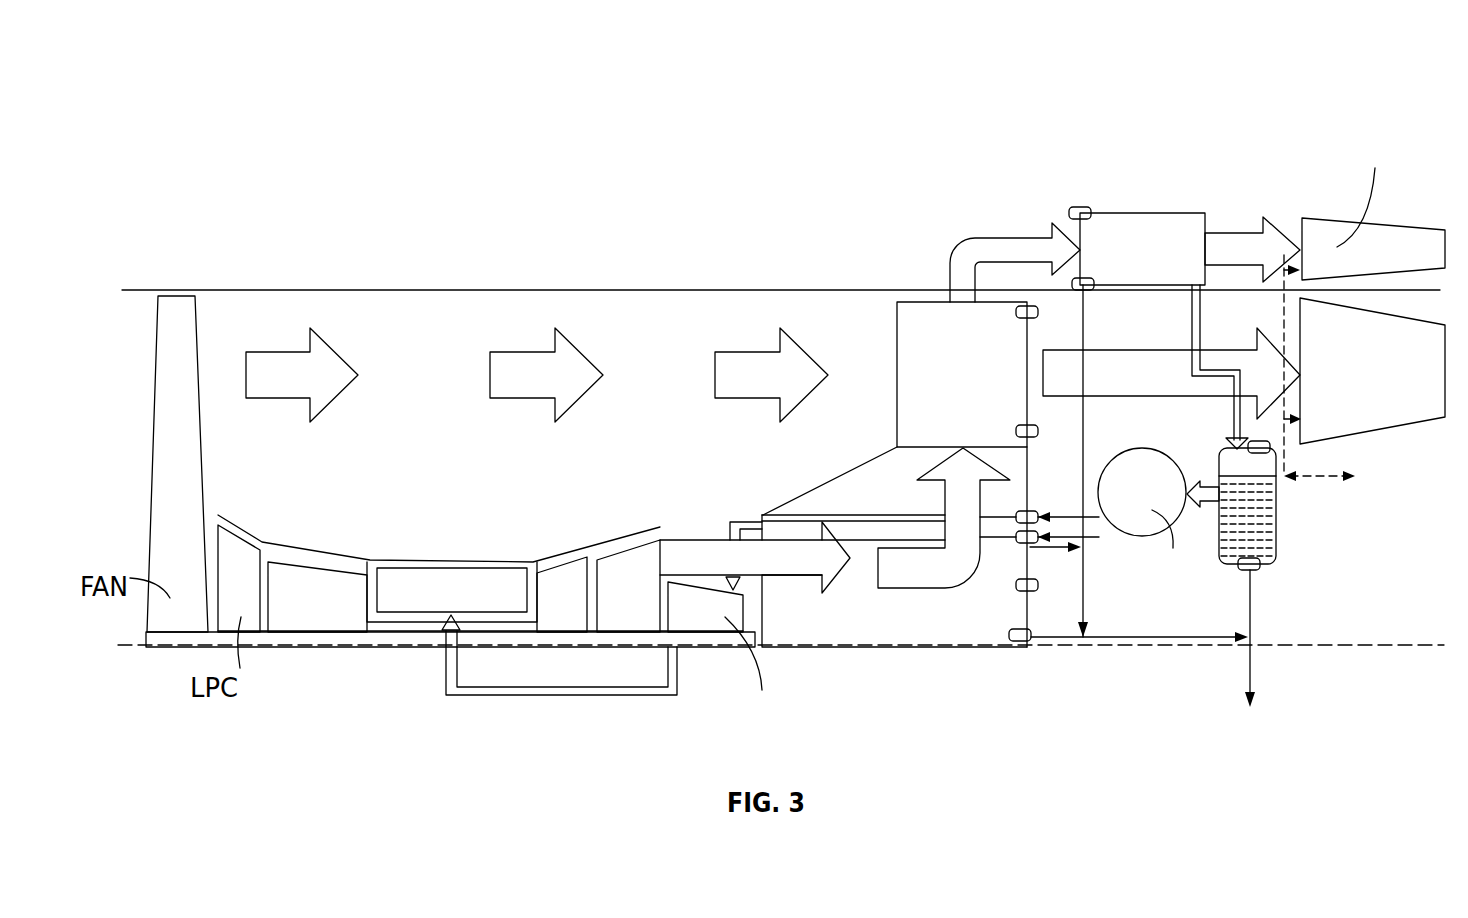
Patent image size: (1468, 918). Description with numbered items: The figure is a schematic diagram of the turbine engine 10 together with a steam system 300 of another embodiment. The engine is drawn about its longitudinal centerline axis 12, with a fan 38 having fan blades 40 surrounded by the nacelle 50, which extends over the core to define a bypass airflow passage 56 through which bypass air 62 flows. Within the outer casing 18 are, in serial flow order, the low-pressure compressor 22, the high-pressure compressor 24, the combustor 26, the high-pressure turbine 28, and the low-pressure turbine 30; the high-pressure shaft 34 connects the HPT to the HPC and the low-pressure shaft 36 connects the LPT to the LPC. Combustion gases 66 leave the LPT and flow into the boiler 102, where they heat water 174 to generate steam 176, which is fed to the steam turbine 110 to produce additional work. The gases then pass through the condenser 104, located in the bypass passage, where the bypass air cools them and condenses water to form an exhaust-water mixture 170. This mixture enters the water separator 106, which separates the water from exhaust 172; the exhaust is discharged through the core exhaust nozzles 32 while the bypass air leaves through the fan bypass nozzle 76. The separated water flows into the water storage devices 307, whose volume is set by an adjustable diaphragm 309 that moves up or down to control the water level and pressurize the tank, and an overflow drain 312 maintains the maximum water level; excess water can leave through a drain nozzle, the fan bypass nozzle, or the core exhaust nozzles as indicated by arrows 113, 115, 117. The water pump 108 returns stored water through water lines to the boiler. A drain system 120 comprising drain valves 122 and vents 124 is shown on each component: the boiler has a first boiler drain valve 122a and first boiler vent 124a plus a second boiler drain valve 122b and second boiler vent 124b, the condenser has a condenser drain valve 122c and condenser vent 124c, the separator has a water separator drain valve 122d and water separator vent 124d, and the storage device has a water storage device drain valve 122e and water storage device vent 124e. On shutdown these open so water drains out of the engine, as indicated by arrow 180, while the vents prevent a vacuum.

The steam system 300 is at (840, 140).
The turbine engine 10 is at (189, 242).
The nacelle 50 is at (398, 289).
The bypass airflow passage 56 is at (713, 302).
The longitudinal centerline axis 12 is at (1095, 647).
The fan blades 40 is at (152, 335).
The fan 38 is at (140, 432).
The bypass air 62 is at (530, 400).
The low-pressure compressor 22 is at (240, 532).
The high-pressure compressor 24 is at (330, 567).
The outer casing 18 is at (455, 563).
The combustor 26 is at (430, 578).
The high-pressure turbine 28 is at (557, 588).
The low-pressure turbine 30 is at (637, 543).
The low-pressure shaft 36 is at (312, 640).
The high-pressure shaft 34 is at (405, 625).
The combustion gases 66 is at (698, 538).
The steam 176 is at (752, 522).
The steam turbine 110 is at (718, 590).
The boiler 102 is at (885, 650).
The condenser 104 is at (922, 300).
The condenser vent 124c is at (1017, 312).
The condenser drain valve 122c is at (1012, 430).
The second boiler vent 124b is at (1037, 518).
The second boiler drain valve 122b is at (1013, 540).
The vents 124 is at (1000, 585).
The first boiler drain valve 122a is at (1023, 650).
The drain system 120 is at (1014, 660).
The drain valves 122 is at (1000, 637).
The first boiler vent 124a is at (1030, 593).
The water 174 is at (1082, 550).
The water pump 108 is at (1125, 455).
The exhaust-water mixture 170 is at (985, 235).
The water separator 106 is at (1143, 213).
The water separator vent 124d is at (1077, 207).
The water separator drain valve 122d is at (1086, 293).
The exhaust 172 is at (1248, 232).
The core exhaust nozzles 32 is at (1412, 227).
The arrow 117 is at (1287, 327).
The fan bypass nozzle 76 is at (1384, 432).
The arrow 115 is at (1314, 421).
The arrow 113 is at (1312, 475).
The water storage device vent 124e is at (1266, 439).
The water storage devices 307 is at (1276, 530).
The adjustable diaphragm 309 is at (1269, 480).
The overflow drain 312 is at (1284, 478).
The water storage device drain valve 122e is at (1253, 566).
The arrow 180 is at (1255, 682).